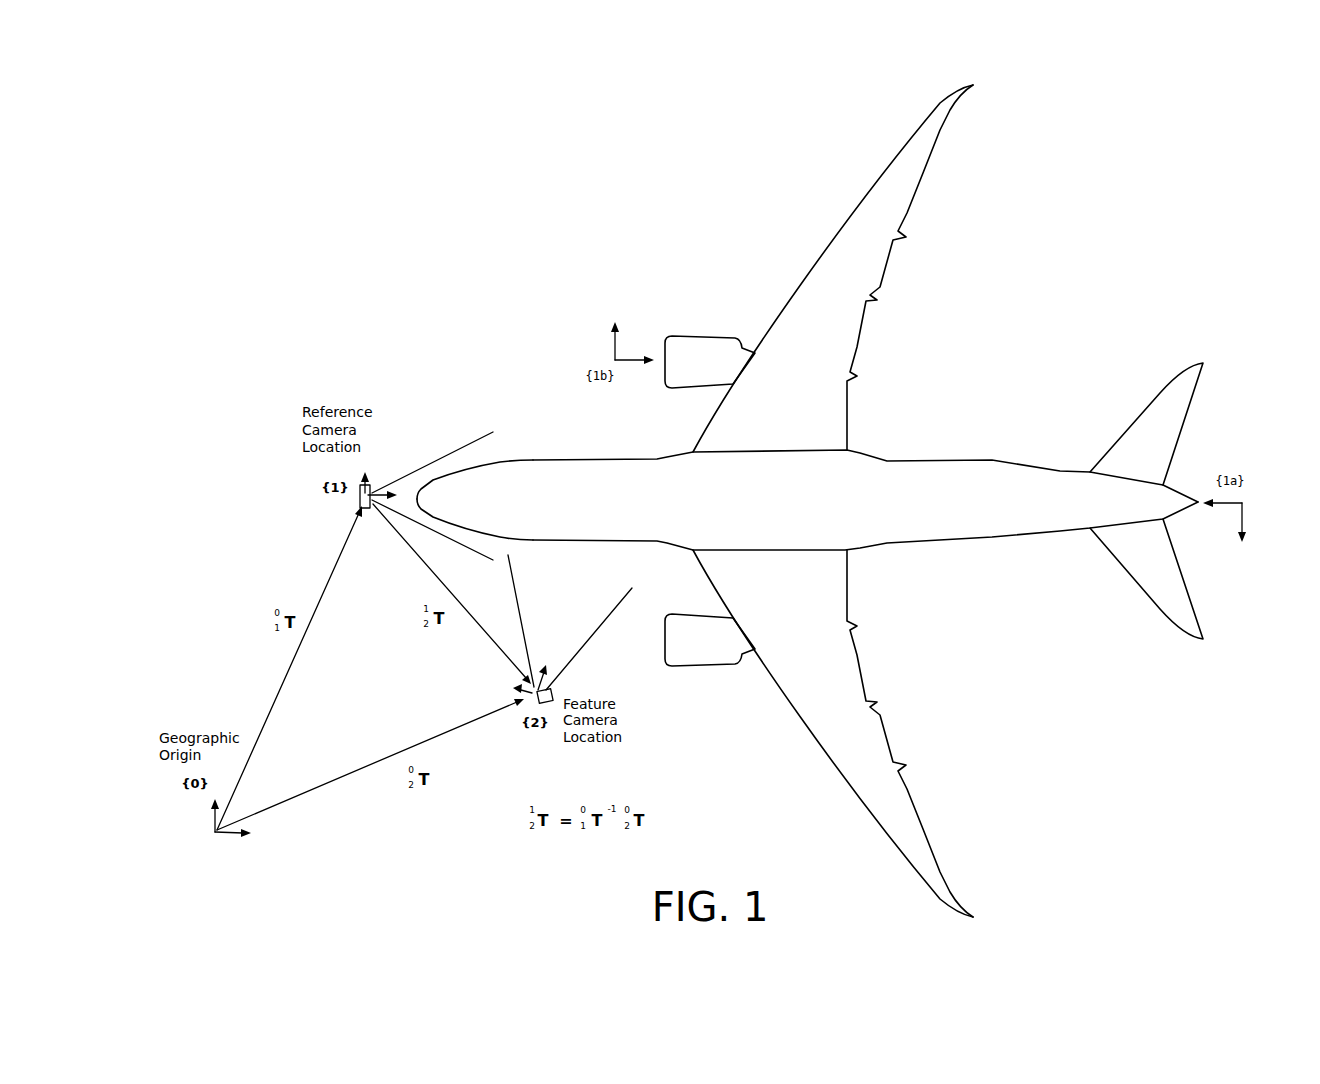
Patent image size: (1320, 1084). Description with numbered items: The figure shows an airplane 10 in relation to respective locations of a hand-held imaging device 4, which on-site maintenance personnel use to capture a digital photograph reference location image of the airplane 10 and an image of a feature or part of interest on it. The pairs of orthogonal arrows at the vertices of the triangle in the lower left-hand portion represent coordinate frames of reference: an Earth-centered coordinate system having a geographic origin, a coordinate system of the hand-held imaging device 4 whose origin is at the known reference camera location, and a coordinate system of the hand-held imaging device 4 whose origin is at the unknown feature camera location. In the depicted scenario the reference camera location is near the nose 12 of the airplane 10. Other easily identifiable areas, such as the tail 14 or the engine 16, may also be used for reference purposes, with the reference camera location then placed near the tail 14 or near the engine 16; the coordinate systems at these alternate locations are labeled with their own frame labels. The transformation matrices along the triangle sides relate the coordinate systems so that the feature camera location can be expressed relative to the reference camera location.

The hand-held imaging device 4 is at (360, 500).
The airplane 10 is at (819, 501).
The nose 12 is at (459, 475).
The tail 14 is at (1172, 487).
The engine 16 is at (699, 333).